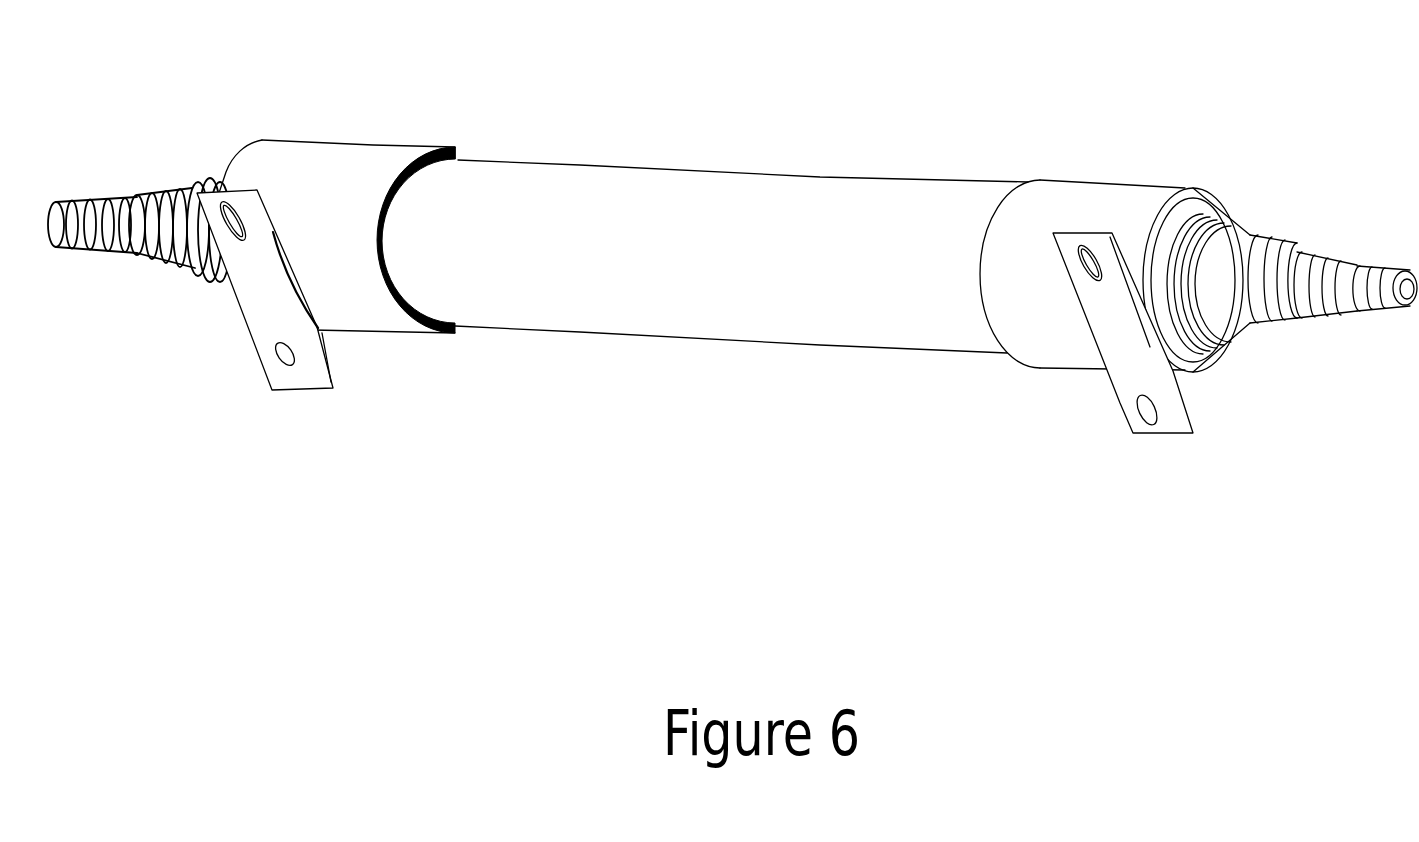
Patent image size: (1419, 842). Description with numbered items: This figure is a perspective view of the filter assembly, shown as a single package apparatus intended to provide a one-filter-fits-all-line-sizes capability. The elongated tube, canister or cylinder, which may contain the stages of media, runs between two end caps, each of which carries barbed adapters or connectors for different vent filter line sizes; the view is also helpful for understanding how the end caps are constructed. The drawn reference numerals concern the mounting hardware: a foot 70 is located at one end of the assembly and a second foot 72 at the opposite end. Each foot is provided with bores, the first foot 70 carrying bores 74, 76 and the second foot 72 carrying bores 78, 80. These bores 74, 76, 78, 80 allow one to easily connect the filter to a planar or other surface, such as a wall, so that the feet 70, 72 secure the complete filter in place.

The foot 70 is at (308, 400).
The foot 72 is at (1173, 440).
The bore 74 is at (239, 204).
The bore 76 is at (302, 373).
The bore 78 is at (1097, 248).
The bore 80 is at (1128, 397).